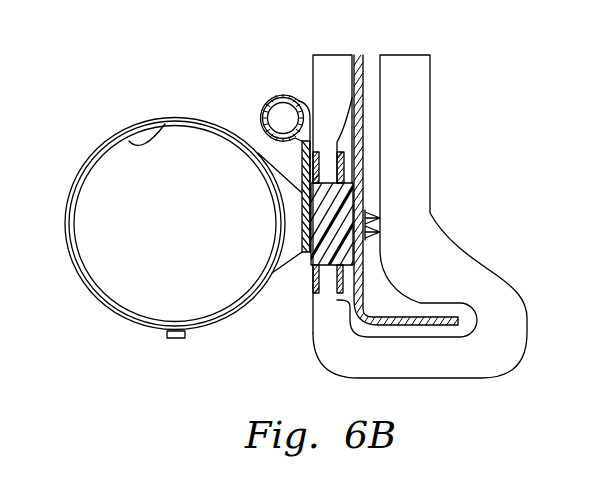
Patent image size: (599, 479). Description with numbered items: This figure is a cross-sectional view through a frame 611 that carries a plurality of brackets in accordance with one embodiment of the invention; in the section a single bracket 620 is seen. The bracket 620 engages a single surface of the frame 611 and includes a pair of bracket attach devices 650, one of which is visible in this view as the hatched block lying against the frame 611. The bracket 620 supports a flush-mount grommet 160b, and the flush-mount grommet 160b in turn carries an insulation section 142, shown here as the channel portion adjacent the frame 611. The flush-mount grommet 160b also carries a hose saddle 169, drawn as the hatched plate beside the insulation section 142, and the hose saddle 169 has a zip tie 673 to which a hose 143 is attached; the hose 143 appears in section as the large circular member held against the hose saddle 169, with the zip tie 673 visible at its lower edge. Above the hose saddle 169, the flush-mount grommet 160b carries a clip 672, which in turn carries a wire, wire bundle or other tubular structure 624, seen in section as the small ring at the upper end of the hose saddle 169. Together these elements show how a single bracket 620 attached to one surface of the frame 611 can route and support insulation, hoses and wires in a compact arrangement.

The insulation section 142 is at (328, 62).
The hose 143 is at (132, 138).
The flush-mount grommet 160b is at (342, 162).
The hose saddle 169 is at (287, 263).
The frame 611 is at (363, 63).
The bracket 620 is at (368, 253).
The tubular structure 624 is at (282, 115).
The bracket attach device 650 is at (381, 202).
The clip 672 is at (265, 113).
The zip tie 673 is at (180, 339).